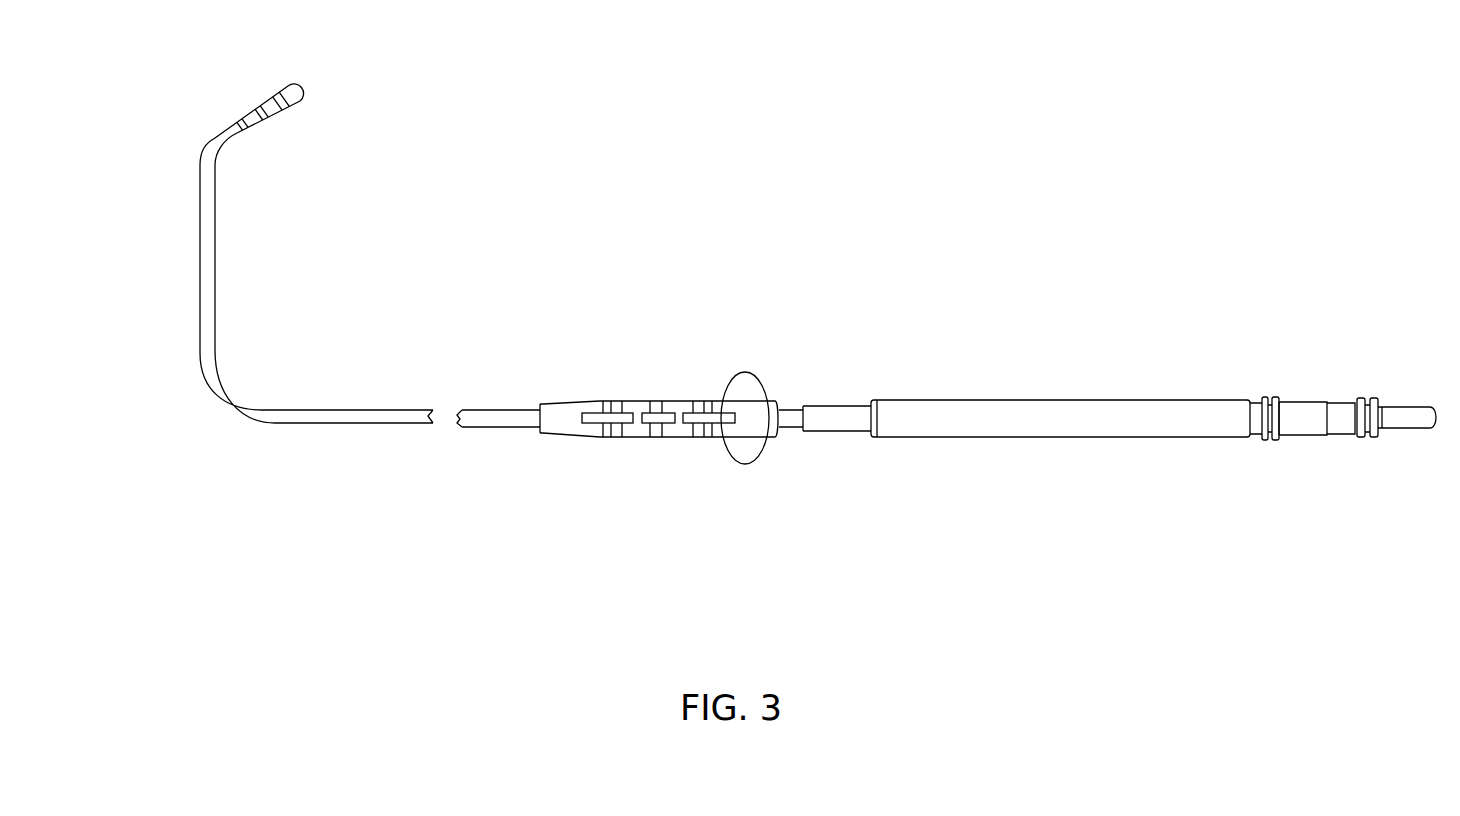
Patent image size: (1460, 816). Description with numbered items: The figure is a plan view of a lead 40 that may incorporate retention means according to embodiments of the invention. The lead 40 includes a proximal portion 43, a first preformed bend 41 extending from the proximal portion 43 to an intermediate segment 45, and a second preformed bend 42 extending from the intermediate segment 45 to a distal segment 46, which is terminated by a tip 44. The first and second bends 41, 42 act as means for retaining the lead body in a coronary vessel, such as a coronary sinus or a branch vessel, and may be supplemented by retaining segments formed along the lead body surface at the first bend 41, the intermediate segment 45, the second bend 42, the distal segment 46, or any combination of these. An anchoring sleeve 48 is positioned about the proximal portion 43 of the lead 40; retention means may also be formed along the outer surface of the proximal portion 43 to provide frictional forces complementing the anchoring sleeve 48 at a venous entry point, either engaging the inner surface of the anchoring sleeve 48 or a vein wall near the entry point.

The lead 40 is at (946, 321).
The first preformed bend 41 is at (240, 412).
The second preformed bend 42 is at (213, 138).
The proximal portion 43 is at (397, 418).
The tip 44 is at (303, 90).
The intermediate segment 45 is at (200, 312).
The distal segment 46 is at (276, 112).
The anchoring sleeve 48 is at (673, 432).